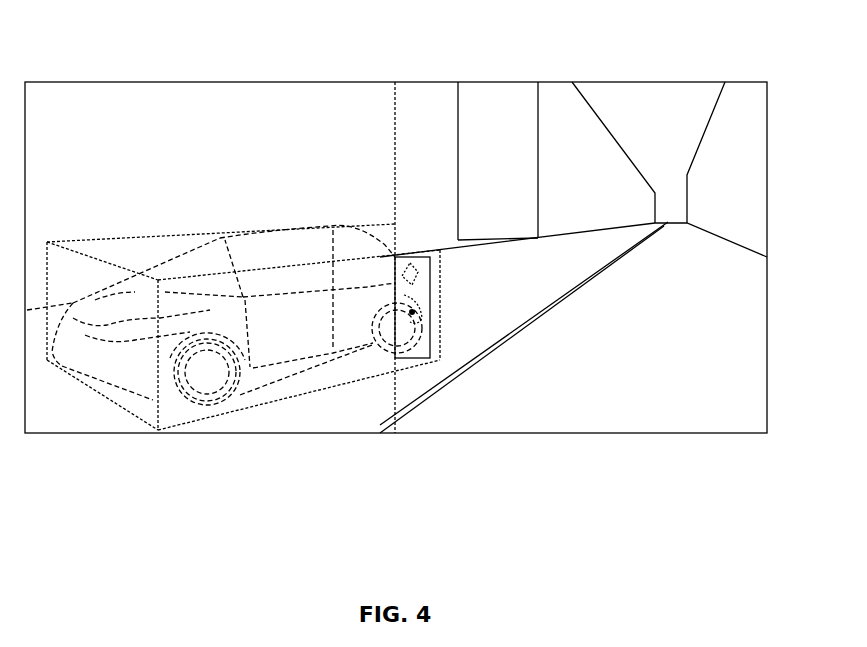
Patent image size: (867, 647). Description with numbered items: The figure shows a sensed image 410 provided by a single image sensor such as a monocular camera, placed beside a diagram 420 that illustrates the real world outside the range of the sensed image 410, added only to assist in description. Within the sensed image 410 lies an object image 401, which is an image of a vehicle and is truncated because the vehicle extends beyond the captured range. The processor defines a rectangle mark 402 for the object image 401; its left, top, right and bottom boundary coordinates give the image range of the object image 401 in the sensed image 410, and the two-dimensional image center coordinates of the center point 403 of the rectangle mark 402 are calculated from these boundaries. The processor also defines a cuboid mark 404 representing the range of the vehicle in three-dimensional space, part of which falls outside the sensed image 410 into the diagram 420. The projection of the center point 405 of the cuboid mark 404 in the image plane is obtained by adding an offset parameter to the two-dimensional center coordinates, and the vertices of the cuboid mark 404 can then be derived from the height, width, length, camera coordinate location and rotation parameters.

The object image 401 is at (414, 257).
The rectangle mark 402 is at (440, 333).
The center point of the rectangle mark 403 is at (430, 302).
The cuboid mark 404 is at (177, 236).
The center point of the cuboid mark 405 is at (285, 308).
The sensed image 410 is at (705, 82).
The diagram 420 is at (352, 82).